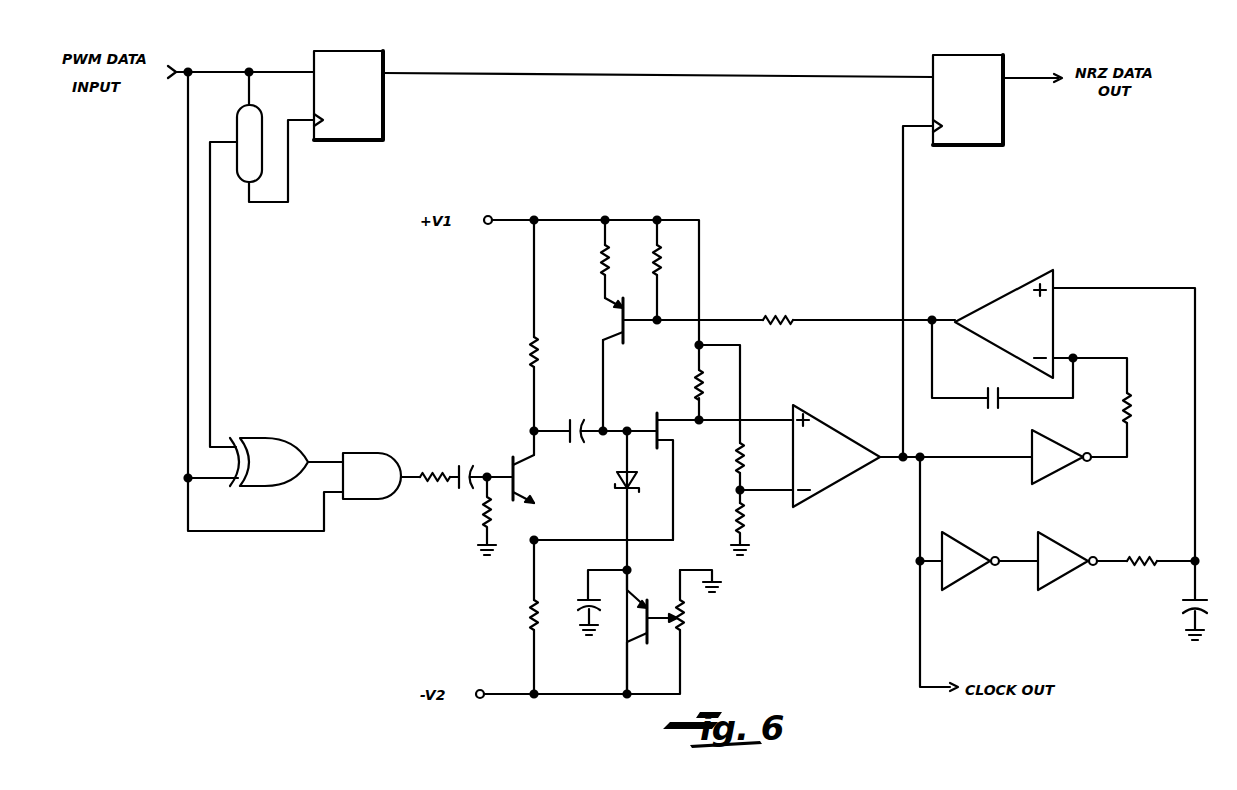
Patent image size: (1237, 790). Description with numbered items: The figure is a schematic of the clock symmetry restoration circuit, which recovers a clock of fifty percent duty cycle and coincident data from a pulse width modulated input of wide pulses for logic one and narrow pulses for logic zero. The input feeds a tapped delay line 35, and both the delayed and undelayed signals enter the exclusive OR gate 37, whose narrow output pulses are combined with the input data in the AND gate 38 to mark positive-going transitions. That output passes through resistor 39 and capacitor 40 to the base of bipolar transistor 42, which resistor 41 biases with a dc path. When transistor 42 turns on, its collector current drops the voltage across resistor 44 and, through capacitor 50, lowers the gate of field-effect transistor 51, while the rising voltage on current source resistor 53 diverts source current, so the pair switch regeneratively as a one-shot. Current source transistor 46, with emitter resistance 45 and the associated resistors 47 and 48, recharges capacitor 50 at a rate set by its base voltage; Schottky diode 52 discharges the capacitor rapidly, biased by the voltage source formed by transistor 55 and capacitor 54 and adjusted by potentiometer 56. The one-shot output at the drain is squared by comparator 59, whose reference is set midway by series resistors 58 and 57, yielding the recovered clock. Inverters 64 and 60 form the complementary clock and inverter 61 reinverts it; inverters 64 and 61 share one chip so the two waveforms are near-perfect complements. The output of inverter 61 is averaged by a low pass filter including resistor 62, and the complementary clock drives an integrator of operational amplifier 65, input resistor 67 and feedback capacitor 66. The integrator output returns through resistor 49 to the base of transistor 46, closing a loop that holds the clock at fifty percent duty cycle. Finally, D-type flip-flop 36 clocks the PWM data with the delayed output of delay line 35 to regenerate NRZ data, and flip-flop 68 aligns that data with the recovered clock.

The tapped delay line 35 is at (264, 108).
The D-type flip-flop 36 is at (383, 58).
The exclusive OR gate 37 is at (290, 432).
The AND gate 38 is at (381, 455).
The resistor 39 is at (439, 460).
The capacitor 40 is at (471, 466).
The resistor 41 is at (481, 513).
The bipolar transistor 42 is at (519, 471).
The resistor 44 is at (528, 354).
The emitter resistance 45 is at (600, 258).
The current source transistor 46 is at (630, 306).
The resistor 47 is at (662, 258).
The resistor 48 is at (694, 385).
The resistor 49 is at (778, 316).
The capacitor 50 is at (580, 408).
The field-effect transistor 51 is at (662, 436).
The Schottky diode 52 is at (615, 478).
The current source resistor 53 is at (527, 610).
The capacitor 54 is at (575, 602).
The transistor 55 is at (660, 593).
The potentiometer 56 is at (689, 619).
The resistor 57 is at (749, 520).
The resistor 58 is at (736, 461).
The comparator 59 is at (845, 438).
The inverter 60 is at (968, 588).
The inverter 61 is at (1058, 586).
The resistor 62 is at (1141, 570).
The inverter 64 is at (1060, 438).
The operational amplifier 65 is at (1000, 298).
The feedback capacitor 66 is at (990, 390).
The input resistor 67 is at (1134, 404).
The D-type flip-flop 68 is at (1003, 62).